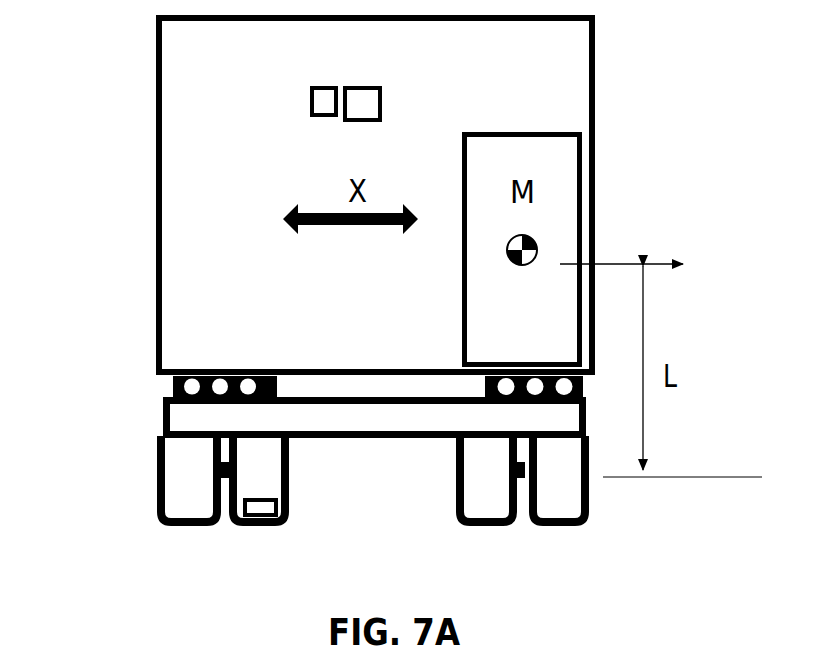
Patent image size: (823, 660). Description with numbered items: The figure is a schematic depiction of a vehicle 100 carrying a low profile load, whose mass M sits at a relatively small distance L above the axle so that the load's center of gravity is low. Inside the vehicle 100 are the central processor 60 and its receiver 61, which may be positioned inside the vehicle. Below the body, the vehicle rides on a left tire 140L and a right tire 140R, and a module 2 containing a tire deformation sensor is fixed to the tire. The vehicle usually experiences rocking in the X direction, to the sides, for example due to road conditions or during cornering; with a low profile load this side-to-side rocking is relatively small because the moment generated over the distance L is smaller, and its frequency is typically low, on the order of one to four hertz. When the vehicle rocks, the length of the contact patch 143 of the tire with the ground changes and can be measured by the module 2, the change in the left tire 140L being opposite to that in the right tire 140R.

The vehicle 100 is at (600, 80).
The receiver 61 is at (323, 79).
The central processor 60 is at (369, 82).
The left tire 140L is at (160, 524).
The right tire 140R is at (557, 480).
The contact patch 143 is at (187, 526).
The module 2 is at (264, 512).